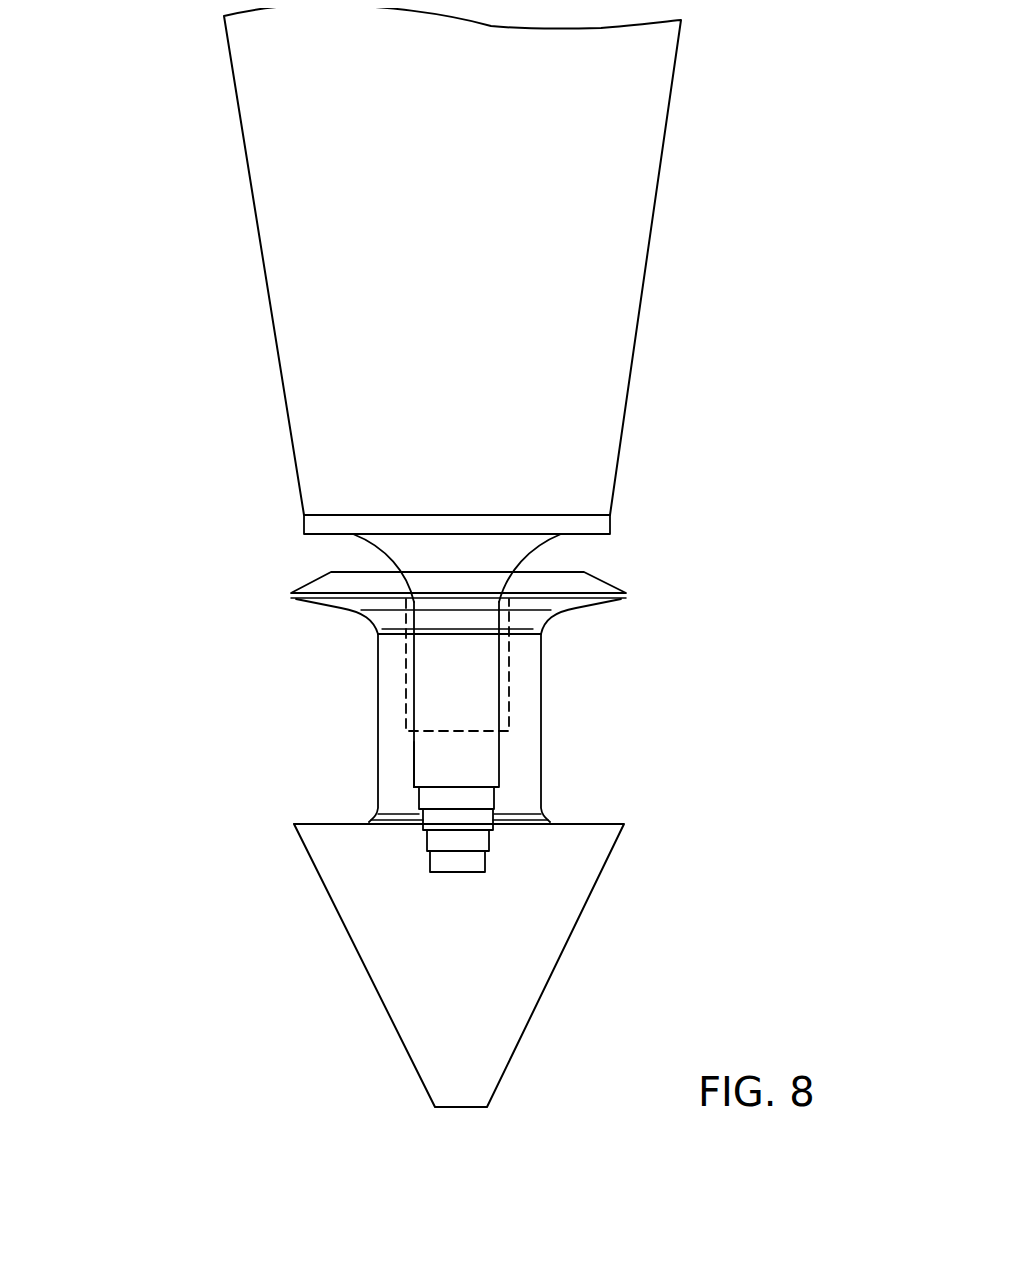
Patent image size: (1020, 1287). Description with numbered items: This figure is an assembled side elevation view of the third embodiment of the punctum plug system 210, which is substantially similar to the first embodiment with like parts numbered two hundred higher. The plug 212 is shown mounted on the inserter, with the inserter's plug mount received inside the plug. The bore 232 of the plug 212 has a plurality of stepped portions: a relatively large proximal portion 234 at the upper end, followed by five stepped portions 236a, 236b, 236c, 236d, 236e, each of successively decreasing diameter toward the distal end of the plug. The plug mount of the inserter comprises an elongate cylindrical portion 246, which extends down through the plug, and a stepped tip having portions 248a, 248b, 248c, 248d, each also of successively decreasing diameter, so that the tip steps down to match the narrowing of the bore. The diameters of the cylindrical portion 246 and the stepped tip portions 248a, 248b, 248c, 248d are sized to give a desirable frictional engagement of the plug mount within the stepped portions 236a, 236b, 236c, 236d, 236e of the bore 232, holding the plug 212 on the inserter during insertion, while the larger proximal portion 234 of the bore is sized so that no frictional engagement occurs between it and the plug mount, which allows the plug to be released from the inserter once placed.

The plug system 210 is at (150, 10).
The plug 212 is at (718, 706).
The bore 232 is at (412, 680).
The proximal portion 234 is at (414, 703).
The first stepped portion 236a is at (417, 758).
The second stepped portion 236b is at (418, 795).
The third stepped portion 236c is at (420, 813).
The fourth stepped portion 236d is at (423, 842).
The fifth stepped portion 236e is at (428, 867).
The elongate cylindrical portion 246 is at (458, 698).
The first tip portion 248a is at (482, 797).
The second tip portion 248b is at (483, 812).
The third tip portion 248c is at (480, 835).
The fourth tip portion 248d is at (482, 865).